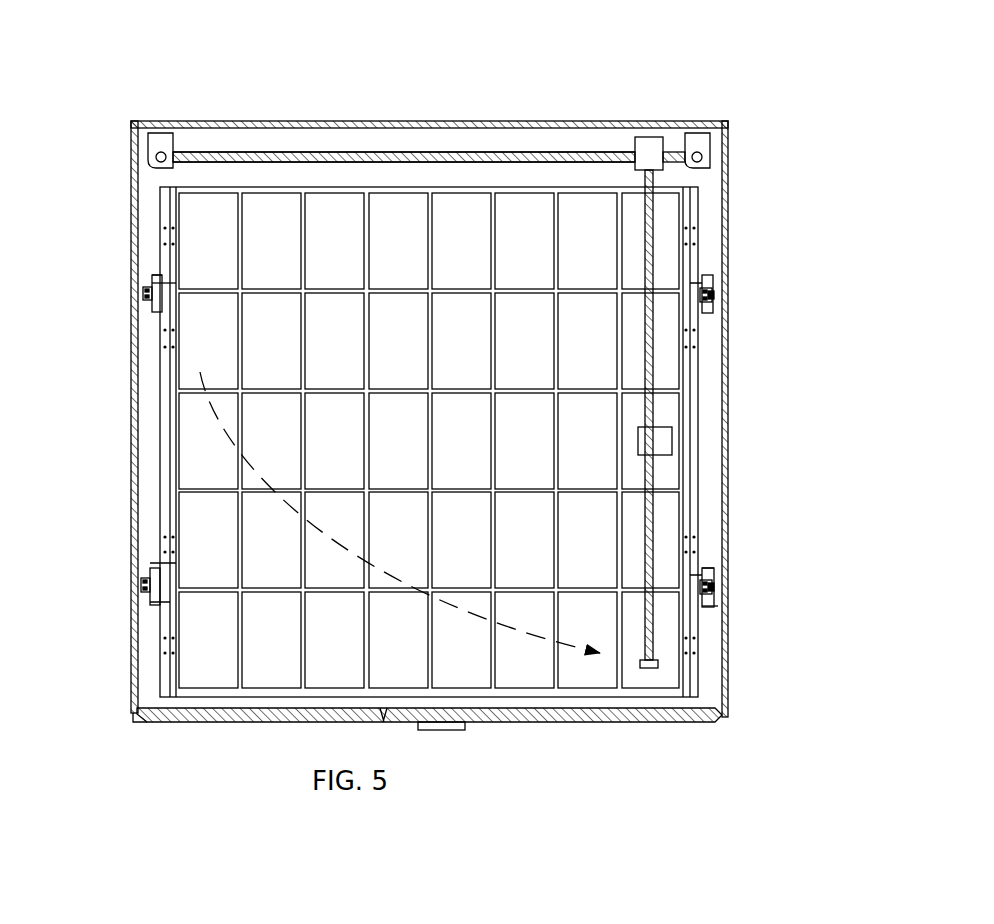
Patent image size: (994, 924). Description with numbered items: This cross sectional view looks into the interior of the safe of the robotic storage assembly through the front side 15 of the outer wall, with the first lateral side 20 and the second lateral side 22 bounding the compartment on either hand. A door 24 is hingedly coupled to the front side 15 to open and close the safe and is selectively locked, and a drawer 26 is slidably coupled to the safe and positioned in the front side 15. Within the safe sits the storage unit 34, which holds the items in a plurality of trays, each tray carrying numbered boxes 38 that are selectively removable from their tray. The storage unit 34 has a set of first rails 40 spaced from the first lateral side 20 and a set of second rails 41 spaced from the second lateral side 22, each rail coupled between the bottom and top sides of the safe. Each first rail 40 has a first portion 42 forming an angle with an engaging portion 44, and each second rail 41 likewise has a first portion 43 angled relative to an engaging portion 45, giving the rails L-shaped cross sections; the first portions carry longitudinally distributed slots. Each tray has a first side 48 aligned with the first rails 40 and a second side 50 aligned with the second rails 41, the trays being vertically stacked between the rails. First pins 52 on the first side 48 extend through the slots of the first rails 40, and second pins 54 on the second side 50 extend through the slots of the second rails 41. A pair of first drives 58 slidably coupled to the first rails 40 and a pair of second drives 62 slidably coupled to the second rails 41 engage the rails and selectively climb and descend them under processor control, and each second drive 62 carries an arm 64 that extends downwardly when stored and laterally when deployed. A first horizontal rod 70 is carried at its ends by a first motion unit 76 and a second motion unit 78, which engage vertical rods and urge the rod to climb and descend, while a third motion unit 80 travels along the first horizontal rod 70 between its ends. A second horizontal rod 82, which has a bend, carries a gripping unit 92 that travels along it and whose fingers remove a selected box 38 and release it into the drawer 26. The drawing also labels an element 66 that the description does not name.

The front side 15 is at (147, 723).
The first lateral side 20 is at (131, 400).
The second lateral side 22 is at (728, 406).
The door 24 is at (555, 722).
The drawer 26 is at (462, 730).
The storage unit 34 is at (280, 185).
The boxes 38 is at (390, 228).
The first rails 40 is at (150, 283).
The second rails 41 is at (716, 277).
The first portion 42 is at (150, 602).
The first portion 43 is at (716, 606).
The engaging portion 44 is at (157, 568).
The engaging portion 45 is at (702, 570).
The first side 48 is at (176, 353).
The second side 50 is at (698, 325).
The first pins 52 is at (153, 278).
The second pins 54 is at (702, 283).
The first drives 58 is at (143, 296).
The second drives 62 is at (715, 296).
The arm 64 is at (716, 305).
The rail lower edge 66 is at (607, 147).
The first horizontal rod 70 is at (378, 152).
The first motion unit 76 is at (160, 133).
The second motion unit 78 is at (700, 133).
The third motion unit 80 is at (652, 137).
The second horizontal rod 82 is at (653, 200).
The gripping unit 92 is at (668, 442).